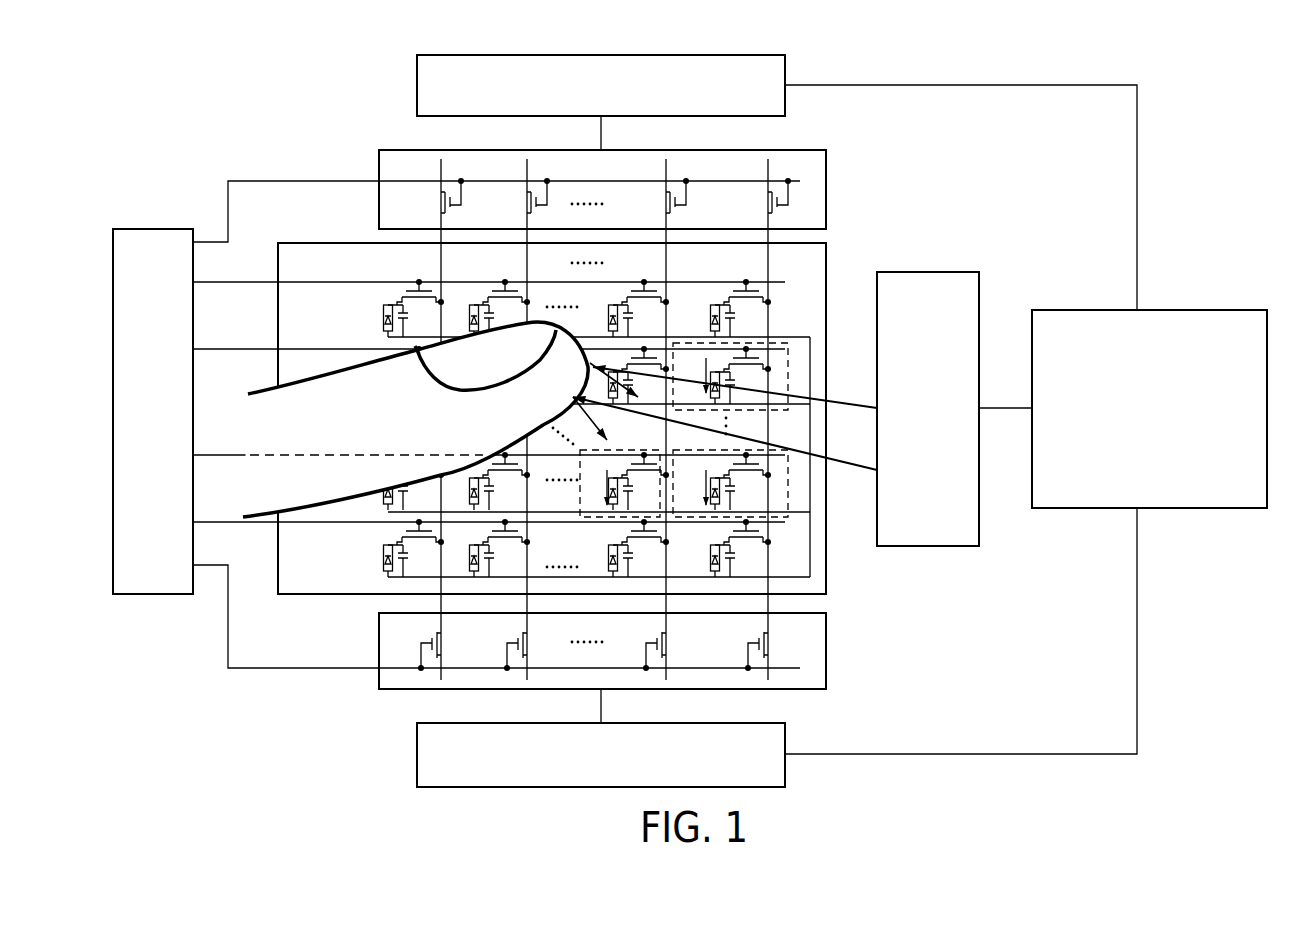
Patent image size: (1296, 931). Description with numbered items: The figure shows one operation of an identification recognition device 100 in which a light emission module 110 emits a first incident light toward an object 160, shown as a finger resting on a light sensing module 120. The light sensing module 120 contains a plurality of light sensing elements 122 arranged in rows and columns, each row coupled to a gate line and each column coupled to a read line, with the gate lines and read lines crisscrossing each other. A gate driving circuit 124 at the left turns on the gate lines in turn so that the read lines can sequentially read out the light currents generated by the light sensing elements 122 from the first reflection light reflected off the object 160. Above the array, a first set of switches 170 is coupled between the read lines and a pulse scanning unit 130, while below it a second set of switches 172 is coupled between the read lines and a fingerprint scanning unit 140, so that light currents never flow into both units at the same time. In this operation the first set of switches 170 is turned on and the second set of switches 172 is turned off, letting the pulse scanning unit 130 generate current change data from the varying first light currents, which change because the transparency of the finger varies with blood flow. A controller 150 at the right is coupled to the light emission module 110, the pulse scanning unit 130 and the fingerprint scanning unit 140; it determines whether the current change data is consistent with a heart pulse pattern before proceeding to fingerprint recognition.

The identification recognition device 100 is at (1187, 100).
The light emission module 110 is at (945, 272).
The light sensing module 120 is at (325, 243).
The light sensing element 122 is at (788, 360).
The gate driving circuit 124 is at (156, 229).
The pulse scanning unit 130 is at (417, 67).
The fingerprint scanning unit 140 is at (417, 753).
The controller 150 is at (1195, 310).
The object 160 is at (265, 388).
The first set of switches 170 is at (392, 149).
The second set of switches 172 is at (378, 643).